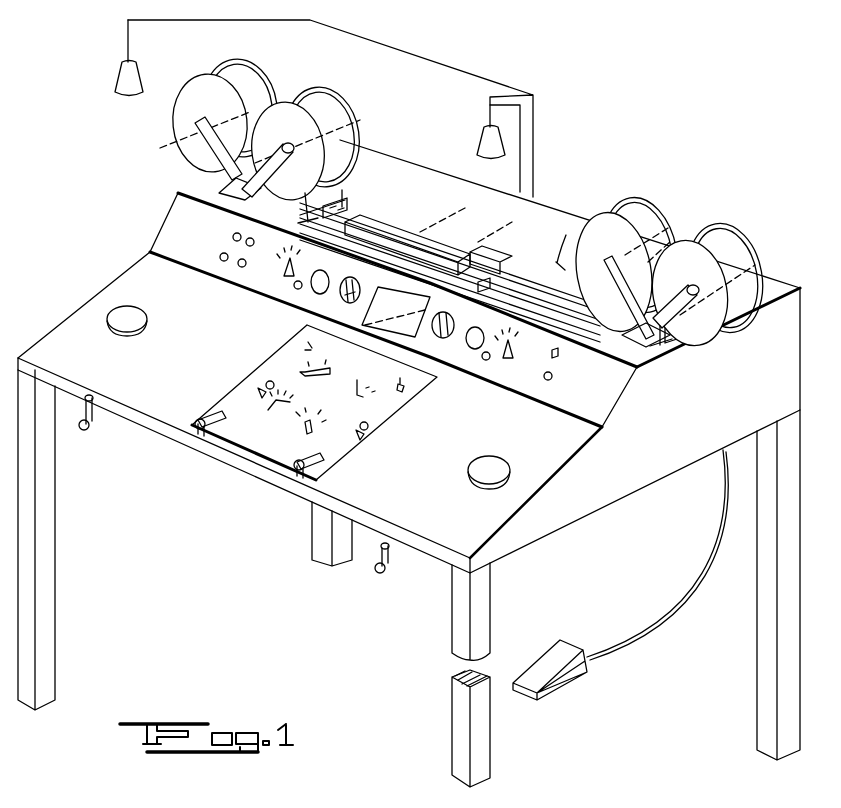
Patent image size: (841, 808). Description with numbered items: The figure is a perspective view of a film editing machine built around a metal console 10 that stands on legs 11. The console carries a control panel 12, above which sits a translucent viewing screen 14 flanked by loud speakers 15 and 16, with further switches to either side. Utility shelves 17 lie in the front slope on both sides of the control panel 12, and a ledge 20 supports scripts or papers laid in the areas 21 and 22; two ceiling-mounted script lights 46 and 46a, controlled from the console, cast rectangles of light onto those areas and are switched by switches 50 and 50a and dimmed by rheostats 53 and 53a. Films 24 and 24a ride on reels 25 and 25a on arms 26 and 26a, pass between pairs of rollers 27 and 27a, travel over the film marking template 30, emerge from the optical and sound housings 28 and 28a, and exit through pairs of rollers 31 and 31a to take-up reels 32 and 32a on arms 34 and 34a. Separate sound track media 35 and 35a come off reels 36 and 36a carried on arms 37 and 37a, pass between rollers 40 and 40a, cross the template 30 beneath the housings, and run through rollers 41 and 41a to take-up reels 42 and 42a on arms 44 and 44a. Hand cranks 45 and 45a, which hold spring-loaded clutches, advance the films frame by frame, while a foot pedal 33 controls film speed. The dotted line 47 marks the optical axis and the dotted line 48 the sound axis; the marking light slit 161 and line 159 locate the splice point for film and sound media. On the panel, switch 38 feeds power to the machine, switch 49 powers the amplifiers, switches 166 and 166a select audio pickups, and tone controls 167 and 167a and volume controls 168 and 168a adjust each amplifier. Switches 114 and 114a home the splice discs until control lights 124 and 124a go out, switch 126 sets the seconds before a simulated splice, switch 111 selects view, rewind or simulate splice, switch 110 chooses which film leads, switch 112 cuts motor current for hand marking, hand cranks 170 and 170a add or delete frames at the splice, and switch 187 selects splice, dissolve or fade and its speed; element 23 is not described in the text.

The metal console 10 is at (616, 507).
The legs 11 is at (52, 535).
The control panel 12 is at (418, 409).
The translucent viewing screen 14 is at (368, 308).
The loud speaker 15 is at (350, 303).
The loud speaker 16 is at (436, 334).
The utility shelves 17 is at (138, 312).
The ledge 20 is at (150, 410).
The area 21 is at (170, 353).
The area 22 is at (466, 463).
The knob 23 is at (311, 348).
The film 24 is at (528, 300).
The film 24a is at (475, 298).
The reel 25 is at (612, 235).
The reel 25a is at (652, 218).
The arm 26 is at (628, 332).
The arm 26a is at (664, 232).
The pair of rollers 27 is at (600, 315).
The pair of rollers 27a is at (573, 287).
The optical and sound housing 28 is at (395, 240).
The optical and sound housing 28a is at (472, 252).
The film marking template 30 is at (526, 257).
The pair of rollers 31 is at (303, 222).
The pair of rollers 31a is at (350, 206).
The take-up reel 32 is at (290, 112).
The take-up reel 32a is at (328, 112).
The foot pedal 33 is at (555, 660).
The arm 34 is at (290, 150).
The arm 34a is at (319, 136).
The sound track medium 35 is at (480, 290).
The sound track medium 35a is at (528, 268).
The reel 36 is at (720, 330).
The reel 36a is at (748, 314).
The arm 37 is at (667, 342).
The arm 37a is at (748, 270).
The switch 38 is at (556, 358).
The pair of rollers 40 is at (490, 292).
The pair of rollers 40a is at (610, 262).
The pair of rollers 41 is at (348, 208).
The pair of rollers 41a is at (345, 203).
The take-up reel 42 is at (180, 105).
The take-up reel 42a is at (248, 80).
The arm 44 is at (183, 134).
The arm 44a is at (199, 131).
The hand crank 45 is at (92, 428).
The hand crank 45a is at (388, 564).
The script light 46 is at (140, 64).
The script light 46a is at (480, 138).
The dotted line 47 is at (503, 223).
The dotted line 48 is at (442, 209).
The switch 49 is at (547, 380).
The switch 50 is at (247, 244).
The switch 50a is at (240, 266).
The rheostat 53 is at (233, 237).
The rheostat 53a is at (221, 257).
The switch 110 is at (360, 395).
The switch 111 is at (305, 430).
The switch 112 is at (400, 384).
The switch 114 is at (258, 390).
The switch 114a is at (366, 430).
The control light 124 is at (268, 384).
The control light 124a is at (368, 426).
The switch 126 is at (300, 372).
The line 159 is at (569, 244).
The marking light slit 161 is at (500, 262).
The switch 166 is at (283, 268).
The switch 166a is at (515, 352).
The tone control 167 is at (294, 286).
The tone control 167a is at (488, 360).
The volume control 168 is at (322, 292).
The volume control 168a is at (470, 343).
The hand crank 170 is at (198, 420).
The hand crank 170a is at (297, 476).
The switch 187 is at (268, 410).